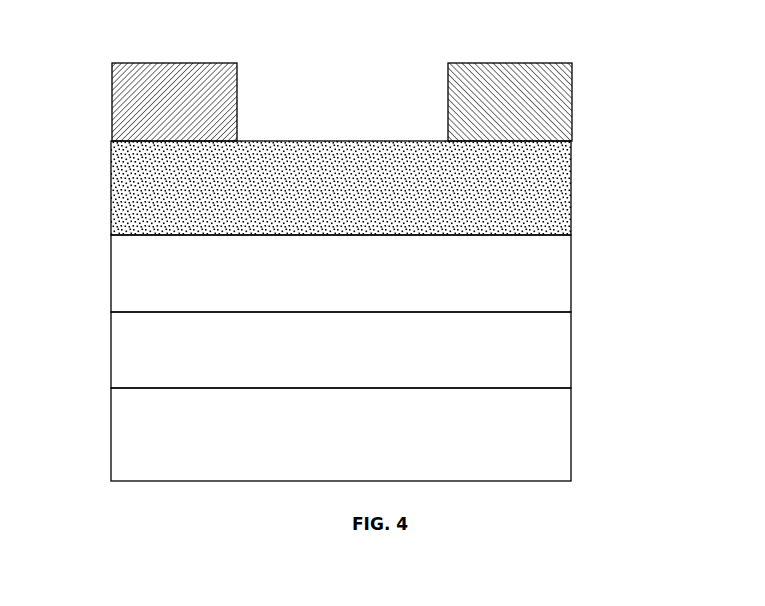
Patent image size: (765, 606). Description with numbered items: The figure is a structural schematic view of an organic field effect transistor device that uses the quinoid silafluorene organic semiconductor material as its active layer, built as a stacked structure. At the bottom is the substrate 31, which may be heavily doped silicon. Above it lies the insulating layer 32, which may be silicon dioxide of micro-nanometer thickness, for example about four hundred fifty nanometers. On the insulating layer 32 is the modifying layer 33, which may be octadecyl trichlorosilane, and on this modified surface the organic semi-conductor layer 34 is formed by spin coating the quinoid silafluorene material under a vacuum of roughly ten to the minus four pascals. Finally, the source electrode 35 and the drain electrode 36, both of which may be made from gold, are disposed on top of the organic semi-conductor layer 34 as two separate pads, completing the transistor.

The substrate 31 is at (563, 437).
The insulating layer 32 is at (568, 372).
The modifying layer 33 is at (563, 277).
The organic semi-conductor layer 34 is at (565, 190).
The source electrode 35 is at (117, 105).
The drain electrode 36 is at (562, 100).